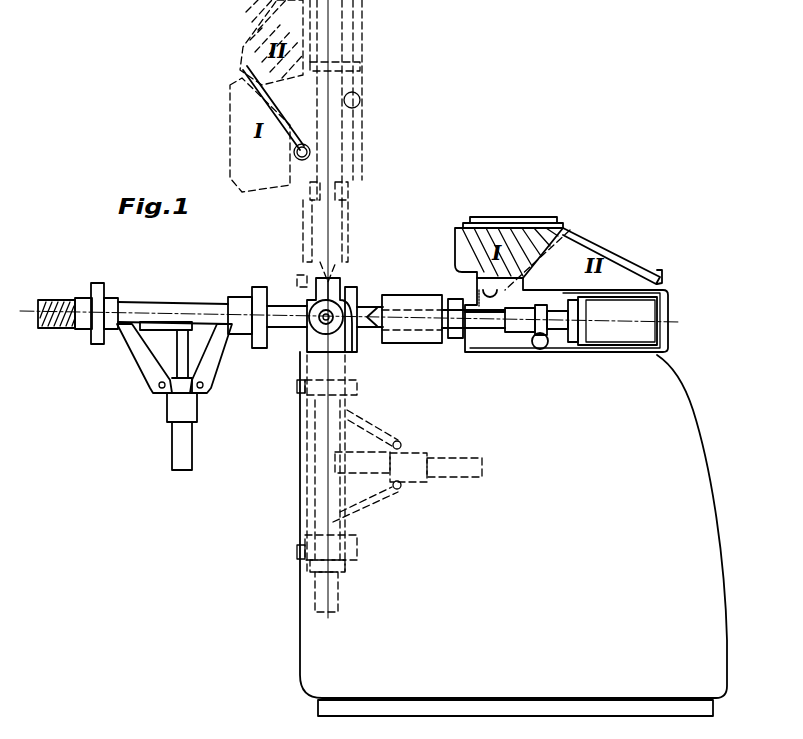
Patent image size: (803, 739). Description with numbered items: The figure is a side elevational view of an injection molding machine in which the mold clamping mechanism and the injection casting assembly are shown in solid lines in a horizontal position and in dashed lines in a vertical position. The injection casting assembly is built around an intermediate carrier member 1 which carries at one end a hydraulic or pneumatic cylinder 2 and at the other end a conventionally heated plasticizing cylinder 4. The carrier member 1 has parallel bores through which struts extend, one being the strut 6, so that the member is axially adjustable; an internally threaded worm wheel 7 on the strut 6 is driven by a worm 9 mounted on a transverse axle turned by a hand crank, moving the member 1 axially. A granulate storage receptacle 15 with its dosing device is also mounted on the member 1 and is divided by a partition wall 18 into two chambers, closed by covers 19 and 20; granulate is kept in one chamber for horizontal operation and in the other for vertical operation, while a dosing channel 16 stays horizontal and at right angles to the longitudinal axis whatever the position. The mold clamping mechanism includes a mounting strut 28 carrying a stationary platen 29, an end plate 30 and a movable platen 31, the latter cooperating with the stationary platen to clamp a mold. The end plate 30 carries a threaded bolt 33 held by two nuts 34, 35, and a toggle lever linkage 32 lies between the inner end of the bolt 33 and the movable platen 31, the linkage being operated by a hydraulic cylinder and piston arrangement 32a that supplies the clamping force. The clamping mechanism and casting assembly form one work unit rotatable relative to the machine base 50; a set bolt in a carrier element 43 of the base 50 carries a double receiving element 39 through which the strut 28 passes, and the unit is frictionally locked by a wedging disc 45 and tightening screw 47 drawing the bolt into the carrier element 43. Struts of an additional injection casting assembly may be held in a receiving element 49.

The intermediate carrier member 1 is at (576, 320).
The hydraulic or pneumatic cylinder 2 is at (652, 338).
The plasticizing cylinder 4 is at (412, 307).
The strut 6 is at (452, 324).
The worm wheel 7 is at (543, 331).
The worm 9 is at (538, 348).
The granulate storage receptacle 15 is at (570, 243).
The dosing channel 16 is at (566, 315).
The partition wall 18 is at (528, 270).
The cover 19 is at (532, 219).
The cover 20 is at (612, 247).
The mounting strut 28 is at (288, 312).
The stationary platen 29 is at (357, 332).
The end plate 30 is at (97, 291).
The movable platen 31 is at (257, 302).
The toggle lever linkage 32 is at (143, 323).
The hydraulic cylinder and piston arrangement 32a is at (184, 459).
The threaded bolt 33 is at (62, 300).
The nut 34 is at (83, 297).
The nut 35 is at (116, 300).
The double receiving element 39 is at (330, 288).
The carrier element 43 is at (353, 351).
The wedging disc 45 is at (326, 322).
The tightening screw 47 is at (324, 319).
The receiving element 49 is at (392, 324).
The machine base 50 is at (510, 690).